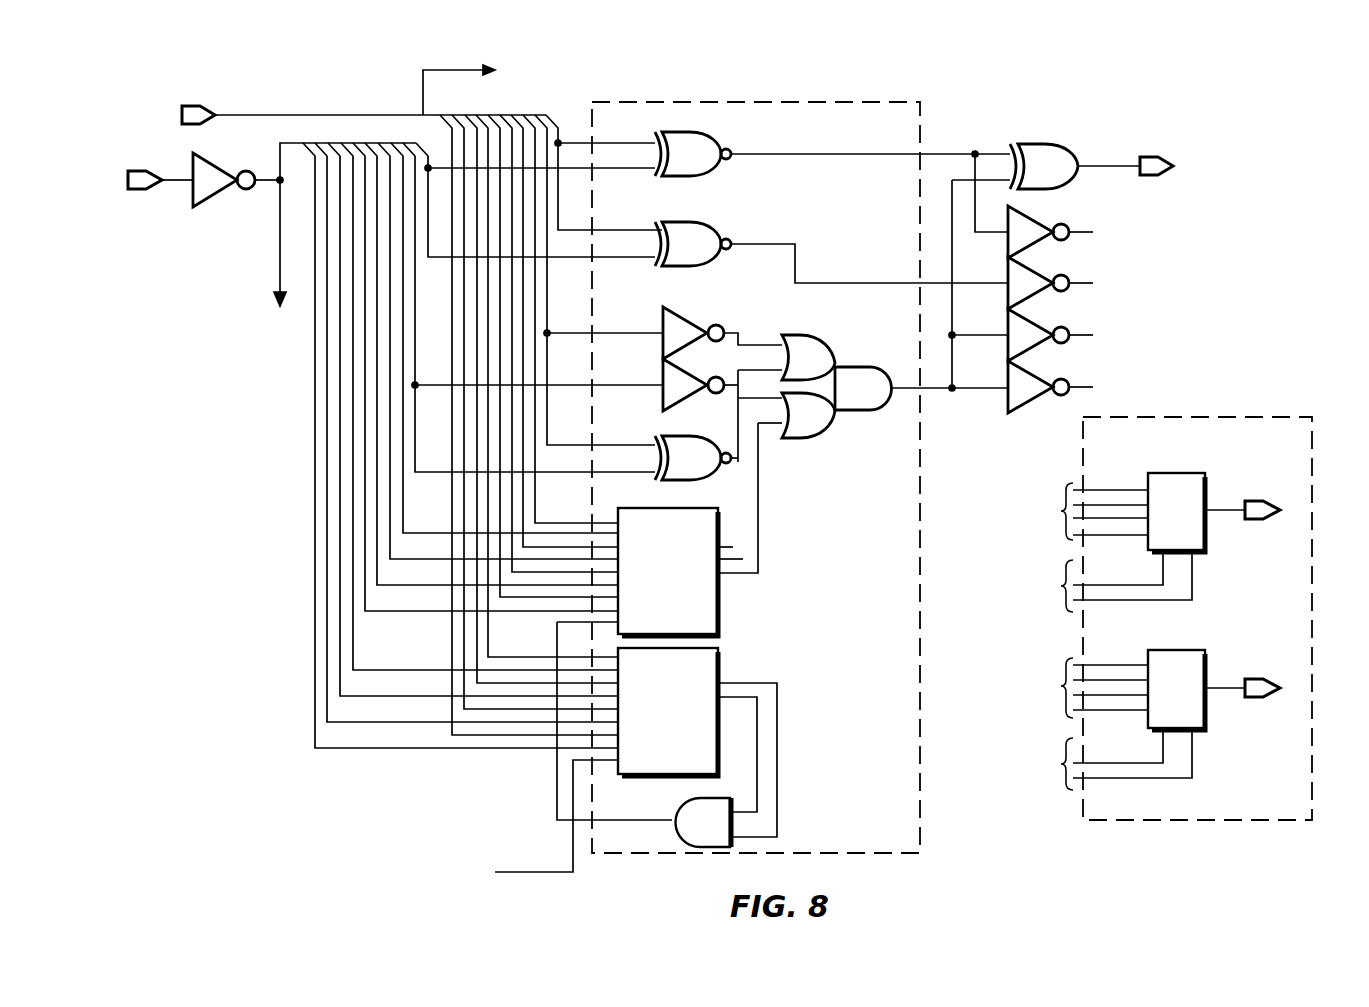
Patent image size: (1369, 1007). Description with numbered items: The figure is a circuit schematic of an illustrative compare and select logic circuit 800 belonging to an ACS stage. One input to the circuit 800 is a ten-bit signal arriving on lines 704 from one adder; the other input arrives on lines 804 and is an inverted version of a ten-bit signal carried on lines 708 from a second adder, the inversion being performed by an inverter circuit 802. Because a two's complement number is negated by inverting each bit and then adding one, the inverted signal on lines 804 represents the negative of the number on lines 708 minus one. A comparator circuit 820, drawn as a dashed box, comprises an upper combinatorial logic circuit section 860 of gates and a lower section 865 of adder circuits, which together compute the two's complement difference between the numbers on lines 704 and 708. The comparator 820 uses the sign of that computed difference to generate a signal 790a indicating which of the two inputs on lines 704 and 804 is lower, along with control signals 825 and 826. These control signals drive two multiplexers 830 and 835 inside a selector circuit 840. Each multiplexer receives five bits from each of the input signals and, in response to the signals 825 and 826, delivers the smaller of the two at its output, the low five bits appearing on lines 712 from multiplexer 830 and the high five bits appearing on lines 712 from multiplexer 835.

The compare and select logic circuit 800 is at (1286, 147).
The lines 704 is at (376, 115).
The lines 804 is at (279, 160).
The lines 708 is at (172, 182).
The inverter circuit 802 is at (228, 197).
The comparator circuit 820 is at (905, 127).
The upper combinatorial logic circuit section 860 is at (824, 327).
The lower section of adder circuits 865 is at (796, 637).
The signal 790a is at (1092, 160).
The signals 825 is at (1113, 223).
The signals 826 is at (1113, 327).
The selector circuit 840 is at (1289, 442).
The multiplexer 830 is at (1208, 486).
The multiplexer 835 is at (1200, 654).
The lines 712 is at (1228, 512).